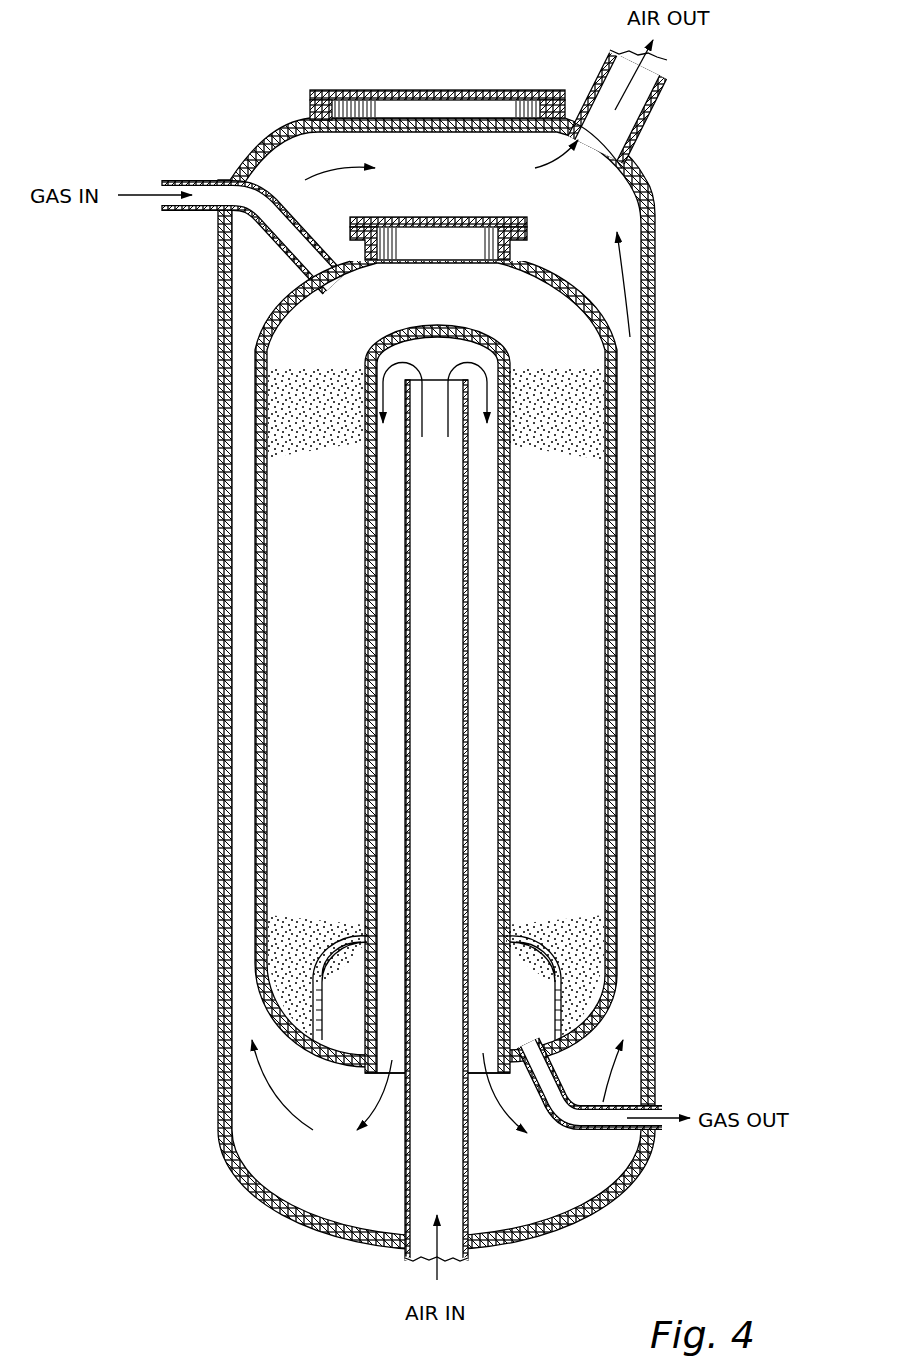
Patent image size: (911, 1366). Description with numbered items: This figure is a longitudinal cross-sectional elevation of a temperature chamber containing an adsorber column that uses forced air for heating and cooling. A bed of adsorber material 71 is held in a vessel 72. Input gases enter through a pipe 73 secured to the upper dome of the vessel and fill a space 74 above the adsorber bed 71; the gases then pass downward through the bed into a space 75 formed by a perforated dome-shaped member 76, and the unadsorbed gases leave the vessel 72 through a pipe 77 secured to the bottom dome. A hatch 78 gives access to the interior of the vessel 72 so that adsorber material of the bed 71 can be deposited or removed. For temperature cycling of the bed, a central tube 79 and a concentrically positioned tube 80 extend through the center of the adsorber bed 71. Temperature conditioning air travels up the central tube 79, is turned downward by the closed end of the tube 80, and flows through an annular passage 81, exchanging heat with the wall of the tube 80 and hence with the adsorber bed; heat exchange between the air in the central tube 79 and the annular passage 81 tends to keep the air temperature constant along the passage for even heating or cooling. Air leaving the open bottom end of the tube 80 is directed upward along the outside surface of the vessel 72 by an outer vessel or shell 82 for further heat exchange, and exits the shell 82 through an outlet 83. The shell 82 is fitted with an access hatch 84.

The bed of adsorber material 71 is at (332, 665).
The vessel 72 is at (618, 462).
The pipe 73 is at (183, 180).
The space 74 is at (452, 304).
The space 75 is at (545, 1017).
The perforated dome-shaped member 76 is at (342, 948).
The pipe 77 is at (657, 1113).
The hatch 78 is at (445, 217).
The central tube 79 is at (405, 483).
The concentrically positioned tube 80 is at (508, 855).
The annular passage 81 is at (482, 628).
The outer vessel or shell 82 is at (657, 782).
The outlet 83 is at (650, 117).
The access hatch 84 is at (455, 90).